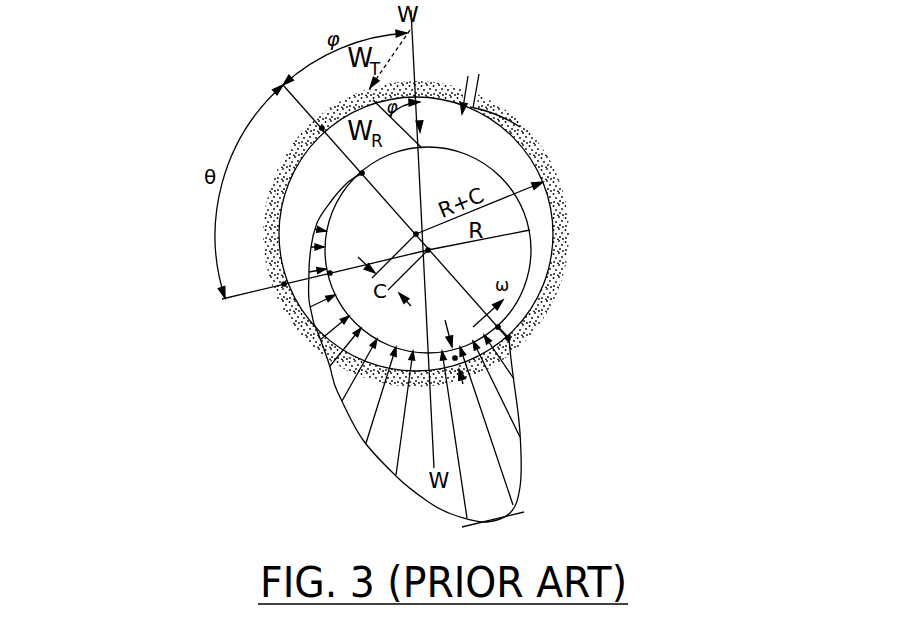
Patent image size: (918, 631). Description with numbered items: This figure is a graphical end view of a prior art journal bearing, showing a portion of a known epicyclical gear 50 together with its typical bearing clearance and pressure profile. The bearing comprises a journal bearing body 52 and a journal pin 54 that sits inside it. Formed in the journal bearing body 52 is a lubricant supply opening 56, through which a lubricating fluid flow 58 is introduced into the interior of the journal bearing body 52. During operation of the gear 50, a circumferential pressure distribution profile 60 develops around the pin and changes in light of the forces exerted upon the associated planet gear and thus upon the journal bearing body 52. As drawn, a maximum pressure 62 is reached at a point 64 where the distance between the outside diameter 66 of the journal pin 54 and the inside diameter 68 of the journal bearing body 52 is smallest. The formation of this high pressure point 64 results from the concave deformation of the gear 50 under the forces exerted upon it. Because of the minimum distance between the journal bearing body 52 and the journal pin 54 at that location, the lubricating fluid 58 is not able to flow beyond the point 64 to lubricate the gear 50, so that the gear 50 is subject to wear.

The epicyclical gear 50 is at (632, 62).
The journal bearing body 52 is at (525, 127).
The journal pin 54 is at (471, 273).
The lubricant supply opening 56 is at (490, 90).
The lubricating fluid flow 58 is at (462, 96).
The circumferential pressure distribution profile 60 is at (522, 418).
The maximum pressure 62 is at (496, 460).
The point 64 is at (457, 358).
The outside diameter 66 is at (523, 207).
The inside diameter 68 is at (556, 224).